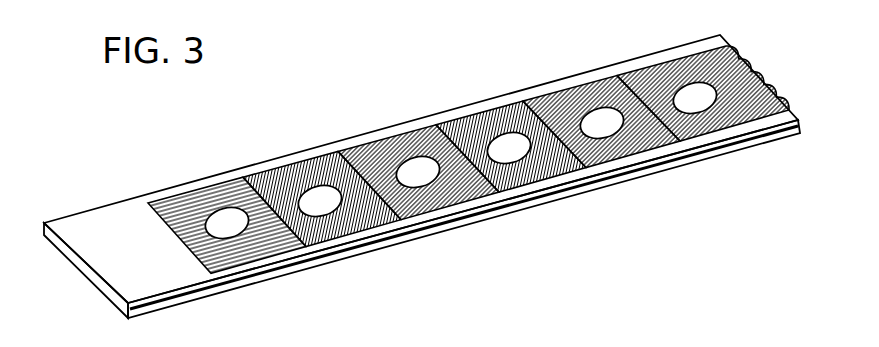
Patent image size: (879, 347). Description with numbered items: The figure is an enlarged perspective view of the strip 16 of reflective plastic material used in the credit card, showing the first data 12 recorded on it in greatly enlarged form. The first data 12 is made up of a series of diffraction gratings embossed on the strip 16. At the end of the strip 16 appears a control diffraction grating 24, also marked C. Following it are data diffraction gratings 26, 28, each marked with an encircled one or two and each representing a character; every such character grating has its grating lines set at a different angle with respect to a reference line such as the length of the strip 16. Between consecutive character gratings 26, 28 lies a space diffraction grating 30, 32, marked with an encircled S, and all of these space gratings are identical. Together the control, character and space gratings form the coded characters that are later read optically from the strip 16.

The strip 16 is at (96, 220).
The control diffraction grating 24 is at (180, 203).
The data diffraction grating 26 is at (273, 180).
The space diffraction grating 30 is at (365, 155).
The data diffraction grating 28 is at (457, 130).
The space diffraction grating 32 is at (560, 102).
The first data 12 is at (658, 82).